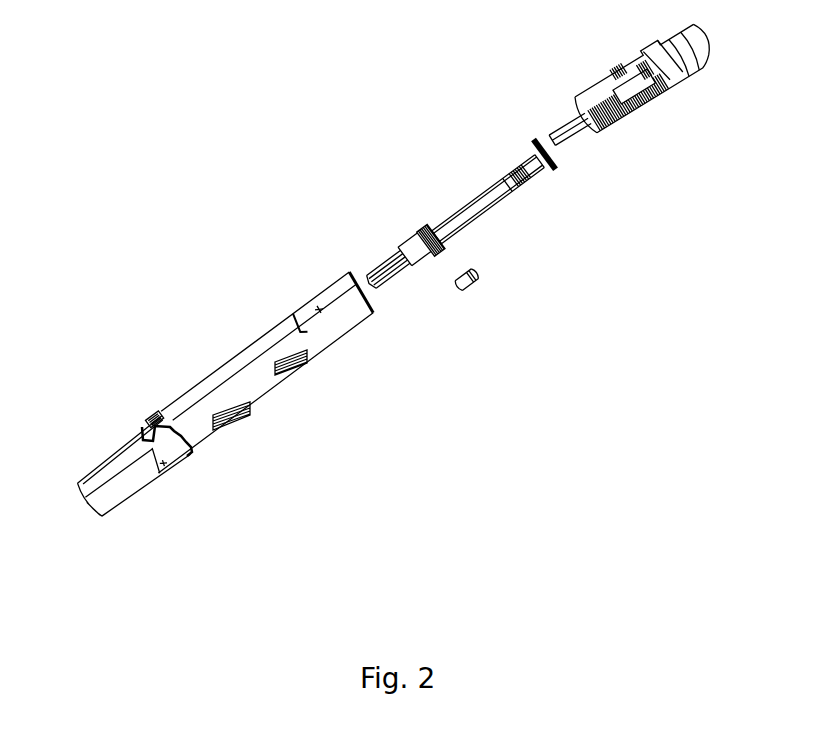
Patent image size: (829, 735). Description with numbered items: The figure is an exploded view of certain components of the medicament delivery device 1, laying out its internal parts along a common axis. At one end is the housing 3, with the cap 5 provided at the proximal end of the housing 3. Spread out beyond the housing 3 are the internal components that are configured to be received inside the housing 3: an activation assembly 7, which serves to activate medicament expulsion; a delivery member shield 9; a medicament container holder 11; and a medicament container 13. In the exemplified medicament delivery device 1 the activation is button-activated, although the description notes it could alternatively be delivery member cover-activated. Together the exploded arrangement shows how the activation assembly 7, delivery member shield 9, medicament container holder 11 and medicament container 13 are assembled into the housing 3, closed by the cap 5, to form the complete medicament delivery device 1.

The medicament delivery device 1 is at (365, 108).
The housing 3 is at (284, 330).
The cap 5 is at (130, 438).
The activation assembly 7 is at (598, 65).
The delivery member shield 9 is at (411, 240).
The medicament container holder 11 is at (473, 289).
The medicament container 13 is at (486, 183).